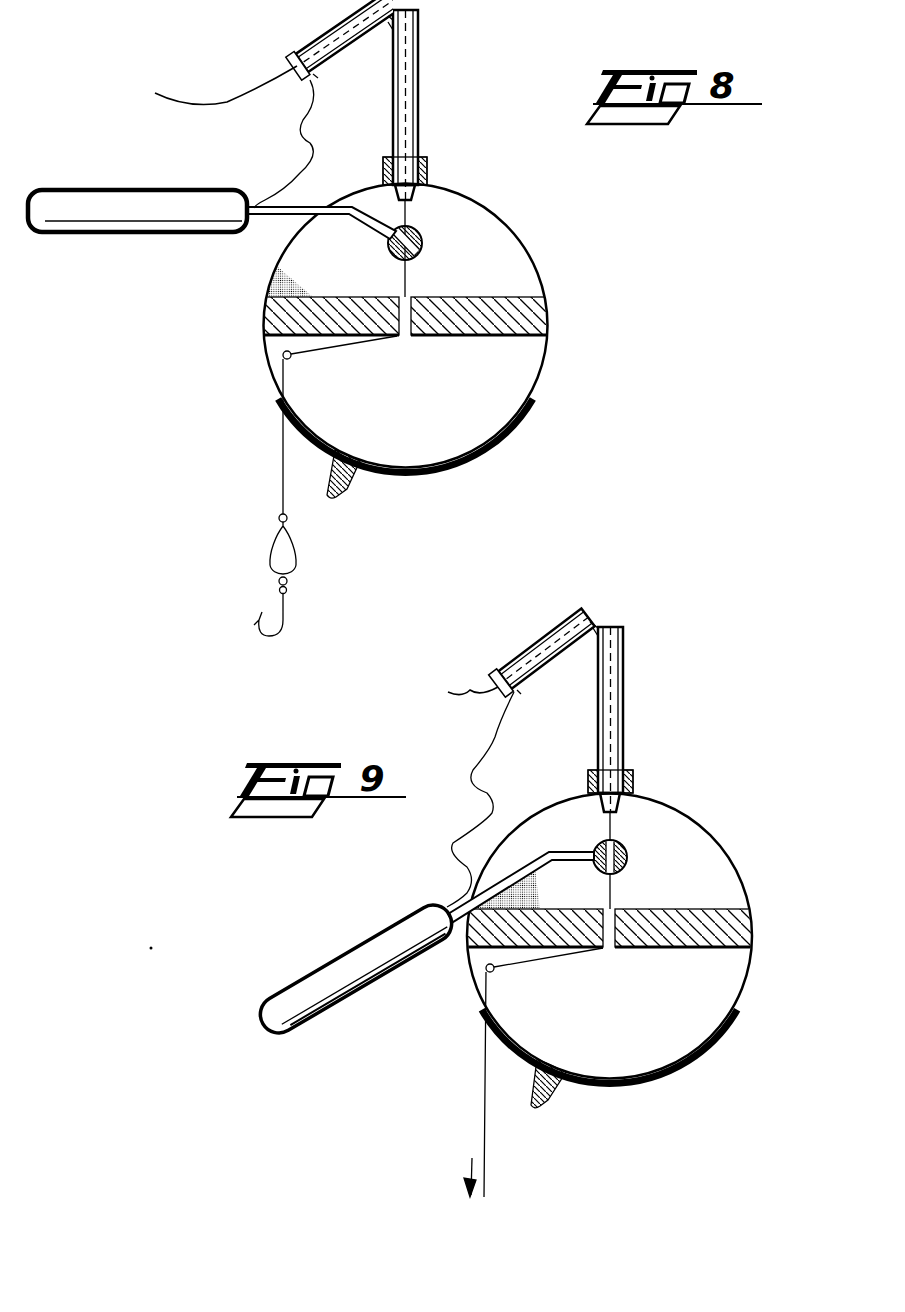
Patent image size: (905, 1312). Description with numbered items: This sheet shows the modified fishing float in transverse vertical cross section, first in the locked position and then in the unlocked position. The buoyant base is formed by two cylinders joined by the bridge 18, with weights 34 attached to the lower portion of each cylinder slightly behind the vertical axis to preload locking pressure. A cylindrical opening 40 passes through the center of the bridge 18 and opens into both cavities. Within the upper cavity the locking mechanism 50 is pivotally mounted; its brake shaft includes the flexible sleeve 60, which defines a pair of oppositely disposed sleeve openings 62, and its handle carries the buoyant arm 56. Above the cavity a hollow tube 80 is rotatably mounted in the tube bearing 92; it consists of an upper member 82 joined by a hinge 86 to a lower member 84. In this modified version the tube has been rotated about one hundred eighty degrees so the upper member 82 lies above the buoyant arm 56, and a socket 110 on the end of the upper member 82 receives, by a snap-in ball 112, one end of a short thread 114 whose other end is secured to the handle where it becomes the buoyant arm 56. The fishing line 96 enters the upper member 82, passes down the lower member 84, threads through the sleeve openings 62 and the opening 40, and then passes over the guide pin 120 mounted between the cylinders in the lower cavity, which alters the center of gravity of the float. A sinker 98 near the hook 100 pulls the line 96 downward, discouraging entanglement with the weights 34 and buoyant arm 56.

In FIG. 8, the bridge 18 is at (535, 318).
In FIG. 9, the bridge 18 is at (735, 925).
In FIG. 8, the weights 34 is at (357, 490).
In FIG. 9, the weights 34 is at (550, 1093).
In FIG. 8, the cylindrical opening 40 is at (412, 298).
In FIG. 9, the cylindrical opening 40 is at (605, 907).
In FIG. 8, the locking mechanism 50 is at (275, 228).
In FIG. 9, the locking mechanism 50 is at (522, 857).
In FIG. 8, the buoyant arm 56 is at (77, 203).
In FIG. 9, the buoyant arm 56 is at (340, 970).
In FIG. 8, the sleeve 60 is at (423, 254).
In FIG. 9, the sleeve 60 is at (624, 850).
In FIG. 8, the sleeve openings 62 is at (411, 227).
In FIG. 9, the sleeve openings 62 is at (606, 840).
In FIG. 8, the hollow tube 80 is at (424, 30).
In FIG. 9, the hollow tube 80 is at (630, 657).
In FIG. 8, the upper member 82 is at (341, 22).
In FIG. 9, the upper member 82 is at (541, 640).
In FIG. 8, the lower member 84 is at (412, 108).
In FIG. 9, the lower member 84 is at (612, 706).
In FIG. 8, the hinge 86 is at (388, 19).
In FIG. 9, the hinge 86 is at (593, 628).
In FIG. 8, the tube bearing 92 is at (427, 160).
In FIG. 9, the tube bearing 92 is at (633, 777).
In FIG. 8, the fishing line 96 is at (222, 102).
In FIG. 9, the fishing line 96 is at (470, 690).
In FIG. 8, the sinker 98 is at (294, 553).
In FIG. 8, the hook 100 is at (258, 616).
In FIG. 8, the socket 110 is at (301, 52).
In FIG. 9, the socket 110 is at (497, 668).
In FIG. 8, the ball 112 is at (313, 74).
In FIG. 9, the ball 112 is at (517, 690).
In FIG. 8, the thread 114 is at (307, 144).
In FIG. 9, the thread 114 is at (492, 751).
In FIG. 8, the guide pin 120 is at (283, 355).
In FIG. 9, the guide pin 120 is at (480, 970).